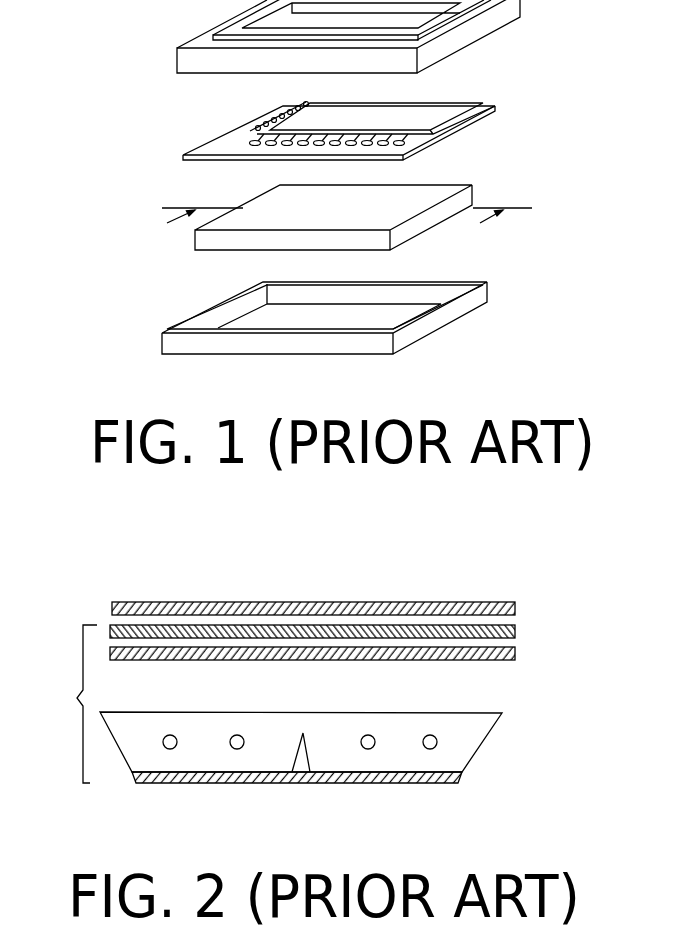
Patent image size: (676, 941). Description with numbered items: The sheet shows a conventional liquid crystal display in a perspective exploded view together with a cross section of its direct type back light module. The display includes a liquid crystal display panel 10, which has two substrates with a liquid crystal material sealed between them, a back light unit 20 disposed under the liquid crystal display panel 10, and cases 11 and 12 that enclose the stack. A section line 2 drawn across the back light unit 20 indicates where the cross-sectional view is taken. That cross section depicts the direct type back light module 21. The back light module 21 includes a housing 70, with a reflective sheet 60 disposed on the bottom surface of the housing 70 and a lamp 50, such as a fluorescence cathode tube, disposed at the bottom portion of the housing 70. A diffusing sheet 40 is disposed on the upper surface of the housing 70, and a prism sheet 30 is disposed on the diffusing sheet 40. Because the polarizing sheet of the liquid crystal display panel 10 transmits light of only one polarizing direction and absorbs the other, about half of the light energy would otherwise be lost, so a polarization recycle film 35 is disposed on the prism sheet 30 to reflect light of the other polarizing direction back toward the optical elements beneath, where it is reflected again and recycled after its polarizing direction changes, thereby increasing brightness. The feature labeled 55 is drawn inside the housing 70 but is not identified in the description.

In FIG. 1, the section line 2- 2 is at (338, 223).
In FIG. 1, the liquid crystal display panel 10 is at (467, 128).
In FIG. 1, the case 11 is at (175, 62).
In FIG. 1, the case 12 is at (440, 330).
In FIG. 1, the back light unit 20 is at (205, 252).
In FIG. 2, the back light module 21 is at (68, 704).
In FIG. 2, the prism sheet 30 is at (267, 627).
In FIG. 2, the polarization recycle film 35 is at (319, 603).
In FIG. 2, the diffusing sheet 40 is at (390, 647).
In FIG. 2, the lamp 50 is at (232, 747).
In FIG. 2, the spike / protrusion 55 is at (303, 767).
In FIG. 2, the reflective sheet 60 is at (443, 783).
In FIG. 2, the housing 70 is at (484, 749).